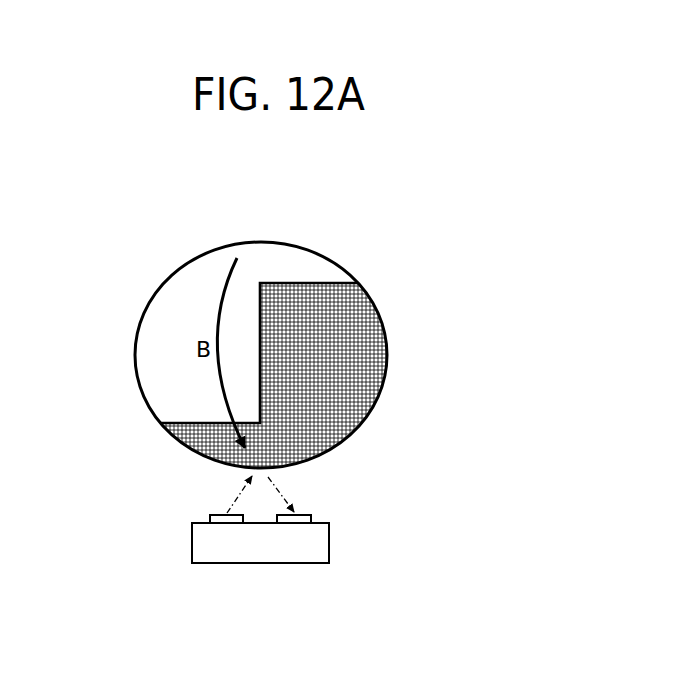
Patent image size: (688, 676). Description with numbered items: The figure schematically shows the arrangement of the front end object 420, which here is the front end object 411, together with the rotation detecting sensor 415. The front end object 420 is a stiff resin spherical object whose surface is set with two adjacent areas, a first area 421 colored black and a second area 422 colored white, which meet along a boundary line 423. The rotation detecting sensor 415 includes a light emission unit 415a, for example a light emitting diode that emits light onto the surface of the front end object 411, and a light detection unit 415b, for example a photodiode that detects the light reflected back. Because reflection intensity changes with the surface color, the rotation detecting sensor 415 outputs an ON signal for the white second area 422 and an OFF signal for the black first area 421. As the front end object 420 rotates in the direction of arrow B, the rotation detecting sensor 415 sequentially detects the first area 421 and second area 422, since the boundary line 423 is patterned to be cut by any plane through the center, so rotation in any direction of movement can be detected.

The front end object 420 is at (312, 335).
The front end object 411 is at (261, 355).
The first area 421 is at (372, 397).
The second area 422 is at (141, 344).
The boundary line 423 is at (293, 284).
The rotation detecting sensor 415 is at (186, 552).
The light emission unit 415a is at (215, 515).
The light detection unit 415b is at (333, 492).